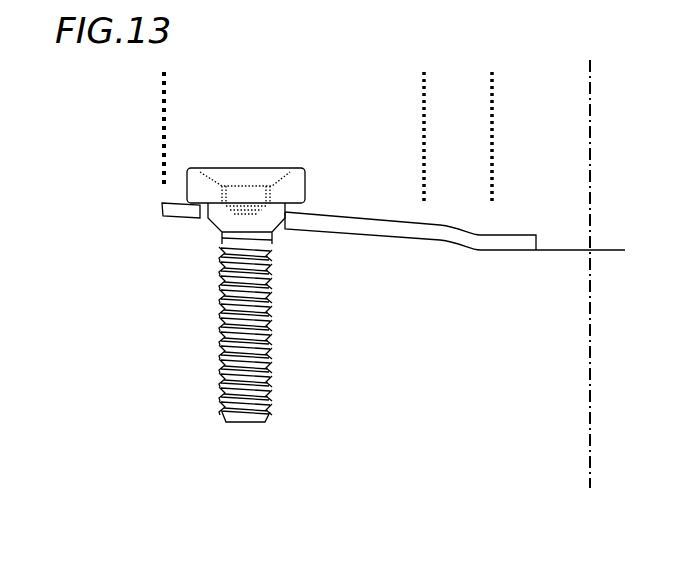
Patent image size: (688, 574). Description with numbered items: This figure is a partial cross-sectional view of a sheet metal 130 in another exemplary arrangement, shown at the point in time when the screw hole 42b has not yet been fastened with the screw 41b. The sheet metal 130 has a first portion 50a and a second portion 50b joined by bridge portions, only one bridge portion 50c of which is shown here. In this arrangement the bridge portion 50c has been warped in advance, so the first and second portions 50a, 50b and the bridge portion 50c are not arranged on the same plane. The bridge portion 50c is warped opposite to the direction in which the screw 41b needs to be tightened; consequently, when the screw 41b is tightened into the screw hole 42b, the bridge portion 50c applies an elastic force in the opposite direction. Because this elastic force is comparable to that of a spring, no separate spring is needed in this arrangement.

The screw 41b is at (240, 421).
The screw hole 42b is at (196, 230).
The sheet metal 130 is at (511, 245).
The first portion 50a is at (521, 137).
The second portion 50b is at (237, 130).
The bridge portion 50c is at (447, 137).